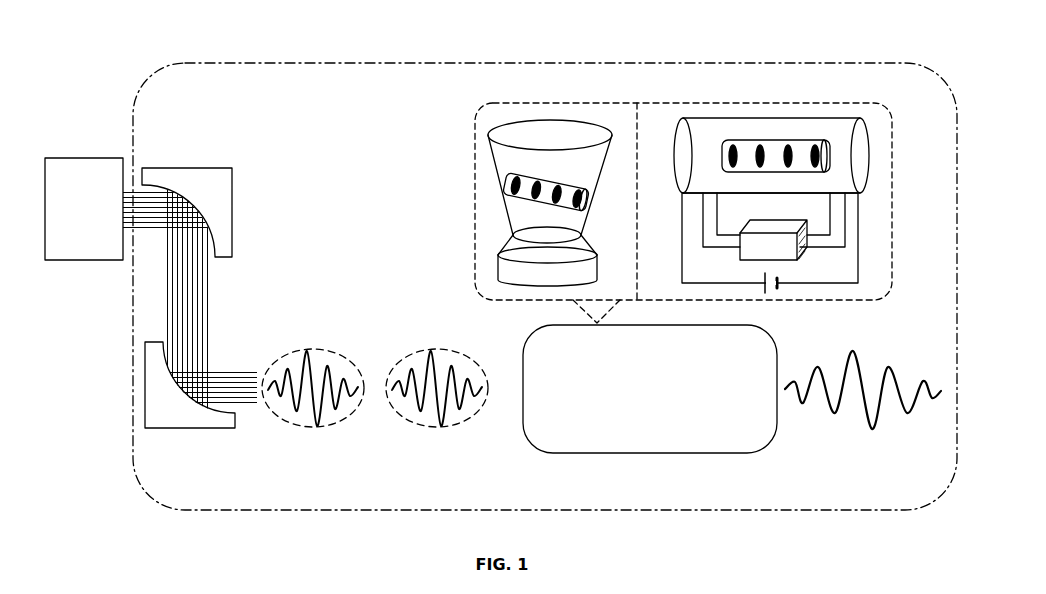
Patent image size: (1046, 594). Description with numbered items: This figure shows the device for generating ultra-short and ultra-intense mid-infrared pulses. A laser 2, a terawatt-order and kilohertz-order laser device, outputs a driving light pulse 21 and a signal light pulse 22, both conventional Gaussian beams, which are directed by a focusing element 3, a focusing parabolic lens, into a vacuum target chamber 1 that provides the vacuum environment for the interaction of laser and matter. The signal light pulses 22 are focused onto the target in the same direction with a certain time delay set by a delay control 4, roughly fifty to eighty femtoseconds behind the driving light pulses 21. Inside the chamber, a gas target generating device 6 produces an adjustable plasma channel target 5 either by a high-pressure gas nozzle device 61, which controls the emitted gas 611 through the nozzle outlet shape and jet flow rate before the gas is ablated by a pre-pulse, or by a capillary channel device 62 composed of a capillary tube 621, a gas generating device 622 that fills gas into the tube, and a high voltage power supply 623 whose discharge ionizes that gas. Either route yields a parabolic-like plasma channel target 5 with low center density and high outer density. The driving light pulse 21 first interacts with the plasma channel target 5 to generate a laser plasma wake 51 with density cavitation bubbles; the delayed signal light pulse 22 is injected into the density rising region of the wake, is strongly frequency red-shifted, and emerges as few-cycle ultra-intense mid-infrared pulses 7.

The vacuum target chamber 1 is at (175, 72).
The laser 2 is at (90, 260).
The focusing element 3 is at (232, 182).
The delay control 4 is at (375, 394).
The plasma channel target 5 is at (533, 440).
The gas target generating device 6 is at (713, 108).
The mid-infrared pulses 7 is at (870, 430).
The driving light pulses 21 is at (404, 357).
The signal light pulses 22 is at (282, 357).
The laser plasma wake 51 is at (503, 187).
The high-pressure gas nozzle device 61 is at (498, 256).
The capillary channel device 62 is at (817, 262).
The gas 611 is at (486, 137).
The capillary tube 621 is at (877, 119).
The gas generating device 622 is at (740, 256).
The high voltage power supply 623 is at (779, 283).